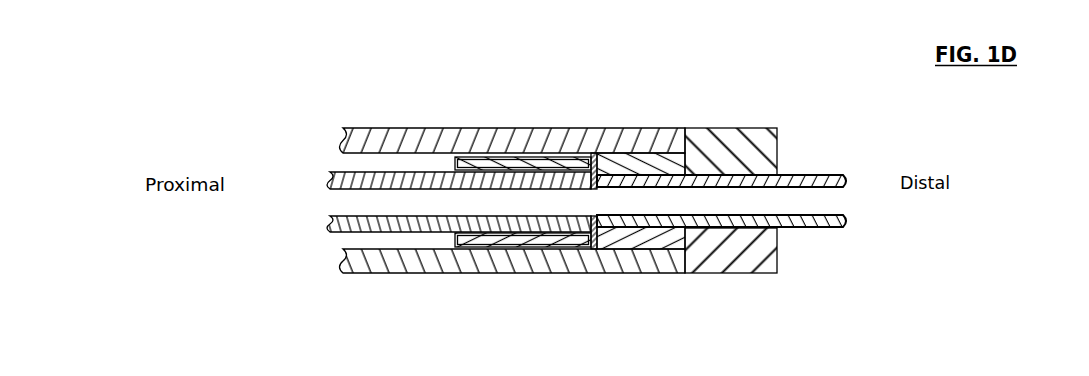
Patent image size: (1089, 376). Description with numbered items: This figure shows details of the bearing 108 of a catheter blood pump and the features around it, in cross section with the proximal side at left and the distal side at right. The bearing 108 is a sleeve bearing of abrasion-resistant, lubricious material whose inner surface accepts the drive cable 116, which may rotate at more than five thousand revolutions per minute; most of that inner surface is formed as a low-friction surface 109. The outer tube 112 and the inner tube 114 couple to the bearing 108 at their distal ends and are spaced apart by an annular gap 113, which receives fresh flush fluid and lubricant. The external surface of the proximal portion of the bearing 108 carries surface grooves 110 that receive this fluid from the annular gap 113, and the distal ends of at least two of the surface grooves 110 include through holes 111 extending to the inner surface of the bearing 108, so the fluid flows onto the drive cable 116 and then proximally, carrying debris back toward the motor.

The bearing 108 is at (810, 104).
The low-friction surface 109 is at (777, 175).
The surface grooves 110 is at (518, 164).
The through holes 111 is at (588, 152).
The outer tube 112 is at (640, 132).
The annular gap 113 is at (357, 160).
The inner tube 114 is at (422, 178).
The drive cable 116 is at (331, 201).